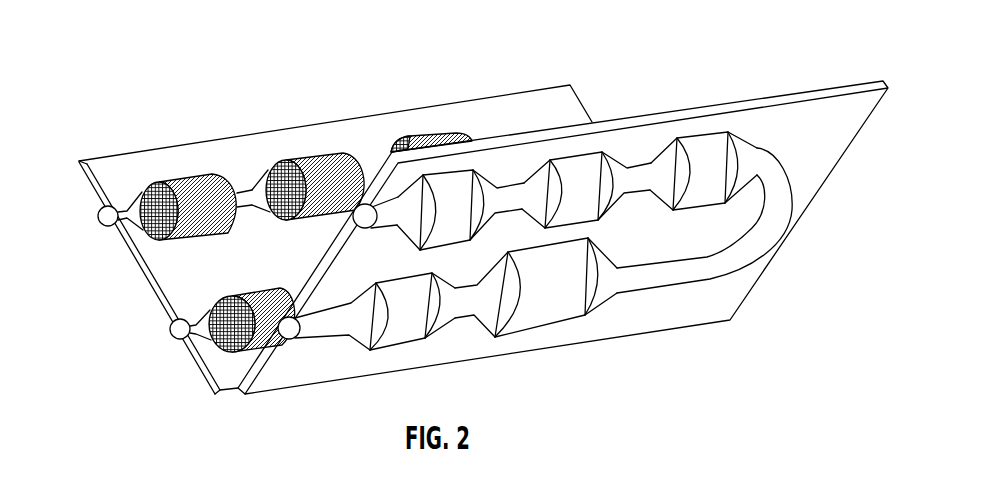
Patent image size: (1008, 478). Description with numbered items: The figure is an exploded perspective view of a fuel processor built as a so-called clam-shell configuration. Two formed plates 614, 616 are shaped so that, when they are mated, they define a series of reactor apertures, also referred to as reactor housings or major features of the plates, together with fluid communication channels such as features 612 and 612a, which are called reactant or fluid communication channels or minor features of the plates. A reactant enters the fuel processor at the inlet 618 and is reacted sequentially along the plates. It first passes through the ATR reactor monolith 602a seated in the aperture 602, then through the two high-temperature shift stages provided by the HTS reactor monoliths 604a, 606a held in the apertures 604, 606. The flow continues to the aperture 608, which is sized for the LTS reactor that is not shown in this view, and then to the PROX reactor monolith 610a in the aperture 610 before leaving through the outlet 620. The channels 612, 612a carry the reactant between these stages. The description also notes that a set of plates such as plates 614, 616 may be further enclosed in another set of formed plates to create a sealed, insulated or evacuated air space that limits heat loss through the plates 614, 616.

The aperture 602 is at (438, 210).
The aperture 604 is at (586, 190).
The aperture 606 is at (703, 171).
The aperture 608 is at (536, 287).
The aperture 610 is at (366, 311).
The ATR reactor monolith 602a is at (167, 182).
The HTS reactor monolith 604a is at (300, 166).
The HTS reactor monolith 606a is at (423, 139).
The PROX reactor monolith 610a is at (255, 353).
The fluid communication channel 612 is at (247, 189).
The fluid communication channel 612a is at (752, 268).
The plate 614 is at (112, 157).
The plate 616 is at (715, 108).
The inlet 618 is at (110, 227).
The outlet 620 is at (177, 340).